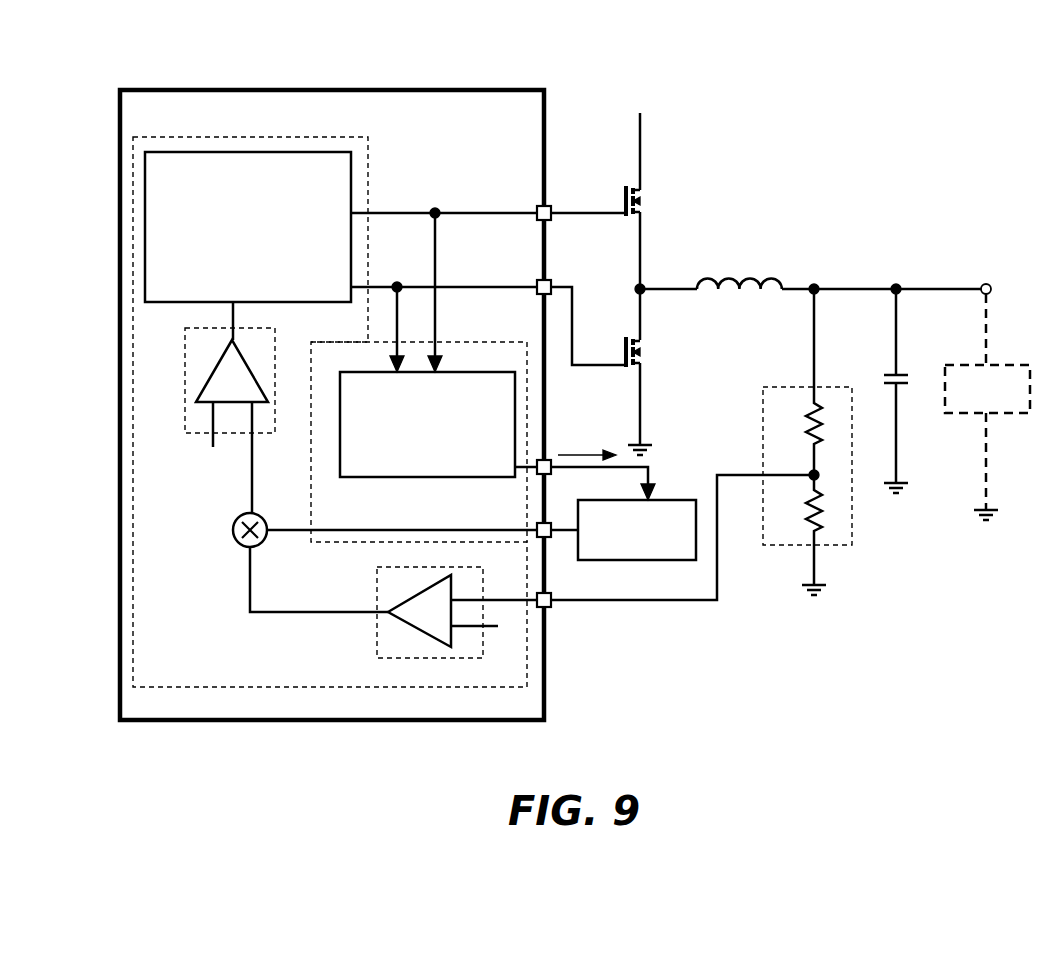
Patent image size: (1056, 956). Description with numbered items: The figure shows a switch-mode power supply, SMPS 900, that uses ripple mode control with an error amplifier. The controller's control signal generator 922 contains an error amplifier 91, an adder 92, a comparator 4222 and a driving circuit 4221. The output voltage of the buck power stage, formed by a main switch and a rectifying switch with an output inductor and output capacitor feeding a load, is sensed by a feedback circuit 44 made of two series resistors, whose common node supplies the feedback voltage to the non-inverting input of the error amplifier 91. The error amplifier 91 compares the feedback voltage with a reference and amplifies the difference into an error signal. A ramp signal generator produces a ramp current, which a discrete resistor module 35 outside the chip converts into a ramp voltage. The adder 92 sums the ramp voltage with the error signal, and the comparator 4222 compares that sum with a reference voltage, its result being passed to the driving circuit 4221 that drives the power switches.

The SMPS 900 is at (900, 92).
The driving circuit 4221 is at (258, 152).
The comparator 4222 is at (185, 362).
The adder 92 is at (232, 524).
The error amplifier 91 is at (377, 658).
The control signal generator 922 is at (176, 688).
The discrete resistor module 35 is at (650, 560).
The feedback circuit 44 is at (850, 548).